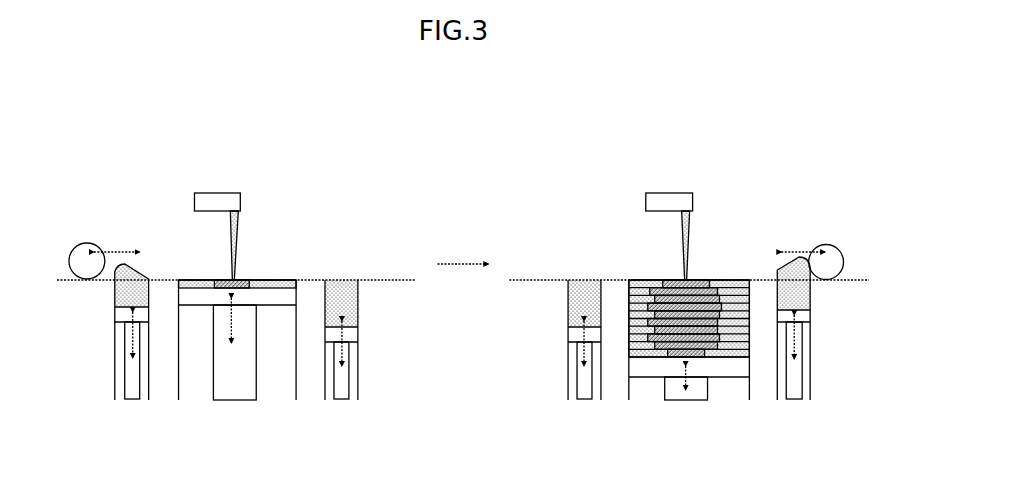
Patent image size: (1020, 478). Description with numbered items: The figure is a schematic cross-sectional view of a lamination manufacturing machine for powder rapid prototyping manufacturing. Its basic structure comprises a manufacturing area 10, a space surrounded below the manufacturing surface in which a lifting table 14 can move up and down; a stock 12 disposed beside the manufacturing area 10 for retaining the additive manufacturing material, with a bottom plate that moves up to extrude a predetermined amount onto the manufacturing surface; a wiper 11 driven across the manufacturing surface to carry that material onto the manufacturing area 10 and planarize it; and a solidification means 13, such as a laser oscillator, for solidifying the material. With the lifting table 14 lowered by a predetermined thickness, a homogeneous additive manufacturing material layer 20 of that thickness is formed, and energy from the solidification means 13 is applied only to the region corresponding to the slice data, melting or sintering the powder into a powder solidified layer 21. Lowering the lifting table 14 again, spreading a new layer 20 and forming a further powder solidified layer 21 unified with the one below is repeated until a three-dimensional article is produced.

The manufacturing area 10 is at (295, 280).
The wiper 11 is at (80, 258).
The stock 12 is at (115, 323).
The solidification means 13 is at (232, 200).
The lifting table 14 is at (279, 298).
The additive manufacturing material layer 20 is at (277, 280).
The powder solidified layer 21 is at (213, 280).